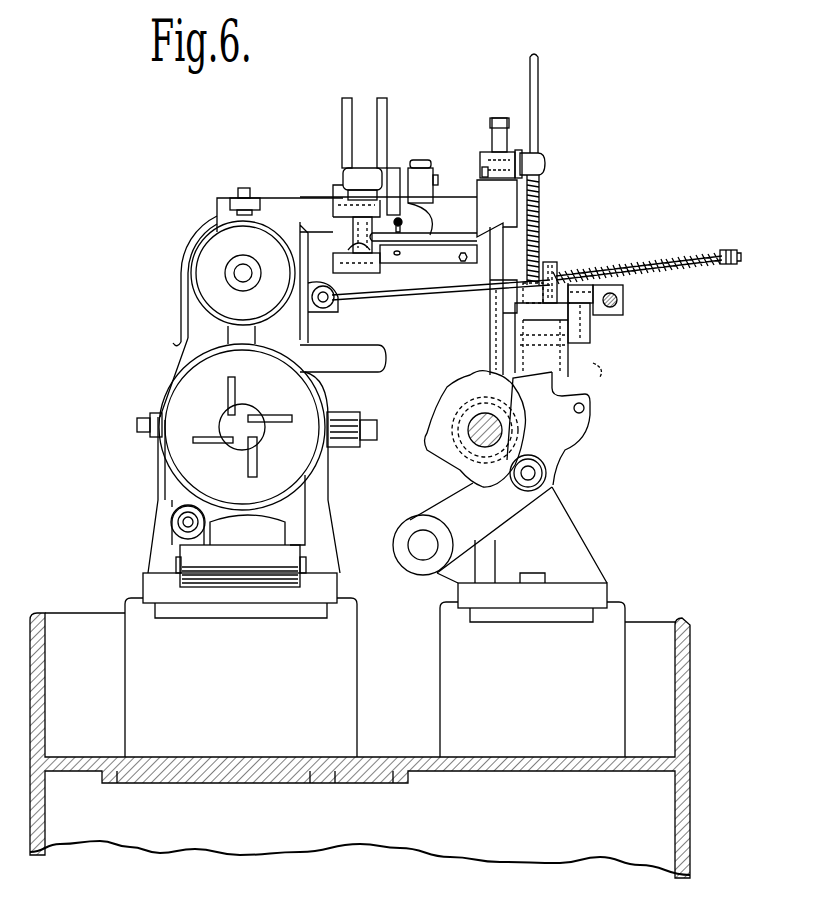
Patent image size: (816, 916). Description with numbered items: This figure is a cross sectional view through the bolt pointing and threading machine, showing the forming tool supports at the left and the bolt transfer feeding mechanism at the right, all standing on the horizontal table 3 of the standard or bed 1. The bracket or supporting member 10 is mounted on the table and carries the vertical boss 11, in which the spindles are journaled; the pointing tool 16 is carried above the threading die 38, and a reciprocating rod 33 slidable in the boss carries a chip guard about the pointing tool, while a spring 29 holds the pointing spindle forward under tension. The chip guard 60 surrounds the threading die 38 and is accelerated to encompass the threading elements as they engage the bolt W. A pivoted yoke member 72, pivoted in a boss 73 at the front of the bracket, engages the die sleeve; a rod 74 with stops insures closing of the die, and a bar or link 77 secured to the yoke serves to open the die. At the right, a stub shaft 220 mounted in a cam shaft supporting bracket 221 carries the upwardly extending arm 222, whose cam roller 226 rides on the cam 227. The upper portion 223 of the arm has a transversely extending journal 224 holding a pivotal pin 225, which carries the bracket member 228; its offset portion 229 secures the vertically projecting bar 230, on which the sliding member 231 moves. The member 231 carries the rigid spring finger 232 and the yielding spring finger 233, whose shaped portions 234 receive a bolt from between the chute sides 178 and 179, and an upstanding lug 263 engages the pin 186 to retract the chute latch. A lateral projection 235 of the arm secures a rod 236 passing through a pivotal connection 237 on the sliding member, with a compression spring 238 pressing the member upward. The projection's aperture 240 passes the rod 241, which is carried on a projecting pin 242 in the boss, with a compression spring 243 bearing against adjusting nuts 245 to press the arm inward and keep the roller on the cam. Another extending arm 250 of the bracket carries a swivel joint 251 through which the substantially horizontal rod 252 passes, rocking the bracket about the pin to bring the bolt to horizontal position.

The standard or bed 1 is at (213, 850).
The horizontal table 3 is at (122, 600).
The bracket or supporting member 10 is at (233, 600).
The vertical boss 11 is at (185, 315).
The pointing tool 16 is at (222, 247).
The reciprocating rod 33 is at (252, 202).
The threading die 38 is at (203, 400).
The chip guard 60 is at (156, 470).
The pivoted yoke member 72 is at (178, 548).
The boss 73 is at (213, 588).
The rod 74 is at (172, 522).
The bar or link 77 is at (372, 422).
The spring 29 is at (386, 362).
The bolt W is at (345, 178).
The rear side of chute 178 is at (387, 108).
The other side of chute 179 is at (342, 111).
The pin 186 is at (400, 170).
The upstanding lug 263 is at (420, 168).
The shaped portions 234 is at (355, 245).
The spring finger 232 is at (462, 238).
The spring finger 233 is at (420, 256).
The projecting pin 242 is at (330, 300).
The rod 241 is at (455, 288).
The offset portion 229 is at (490, 325).
The vertically projecting bar 230 is at (495, 130).
The sliding member 231 is at (480, 165).
The rod 236 is at (538, 92).
The pivotal connection 237 is at (545, 163).
The compression spring 238 is at (540, 195).
The lateral projection 235 is at (552, 262).
The aperture 240 is at (558, 272).
The compression spring 243 is at (700, 250).
The adjusting nuts 245 is at (731, 264).
The extending arm 250 is at (590, 285).
The swivel joint 251 is at (623, 290).
The substantially horizontal rod 252 is at (613, 302).
The bracket member 228 is at (590, 322).
The transversely extending journal 224 is at (540, 350).
The pivotal pin 225 is at (603, 372).
The upper portion of arm 223 is at (570, 388).
The upwardly extending arm 222 is at (566, 450).
The cam roller 226 is at (547, 477).
The cam 227 is at (457, 460).
The stub shaft 220 is at (420, 540).
The cam shaft supporting bracket 221 is at (585, 545).